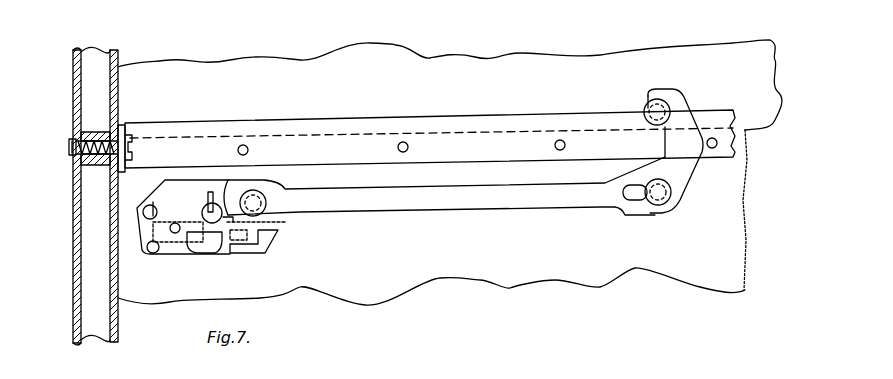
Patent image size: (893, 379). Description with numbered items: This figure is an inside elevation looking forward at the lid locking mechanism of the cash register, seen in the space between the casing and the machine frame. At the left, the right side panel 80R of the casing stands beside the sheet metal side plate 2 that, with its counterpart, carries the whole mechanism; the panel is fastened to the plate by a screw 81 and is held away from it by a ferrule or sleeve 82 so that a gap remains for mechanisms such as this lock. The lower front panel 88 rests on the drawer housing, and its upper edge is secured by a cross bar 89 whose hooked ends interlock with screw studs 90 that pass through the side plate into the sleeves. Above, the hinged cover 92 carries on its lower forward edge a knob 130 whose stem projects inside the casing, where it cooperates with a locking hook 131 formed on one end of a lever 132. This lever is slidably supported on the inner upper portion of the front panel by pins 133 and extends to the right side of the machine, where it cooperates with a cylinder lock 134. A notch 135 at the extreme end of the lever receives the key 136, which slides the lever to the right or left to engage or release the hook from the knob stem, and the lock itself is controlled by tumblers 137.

The right side panel 80R is at (73, 62).
The left sheet metal side plate 2 is at (118, 52).
The hinged cover 92 is at (318, 72).
The lower front panel 88 is at (473, 275).
The screws 81 is at (69, 148).
The ferrules or sleeves 82 is at (100, 165).
The screw studs 90 is at (133, 136).
The cross bar 89 is at (383, 124).
The knob 130 is at (657, 106).
The locking hook 131 is at (680, 101).
The lever 132 is at (441, 207).
The pins 133 is at (266, 203).
The cylinder lock 134 is at (203, 211).
The notch 135 is at (200, 240).
The key 136 is at (208, 195).
The tumblers 137 is at (250, 241).